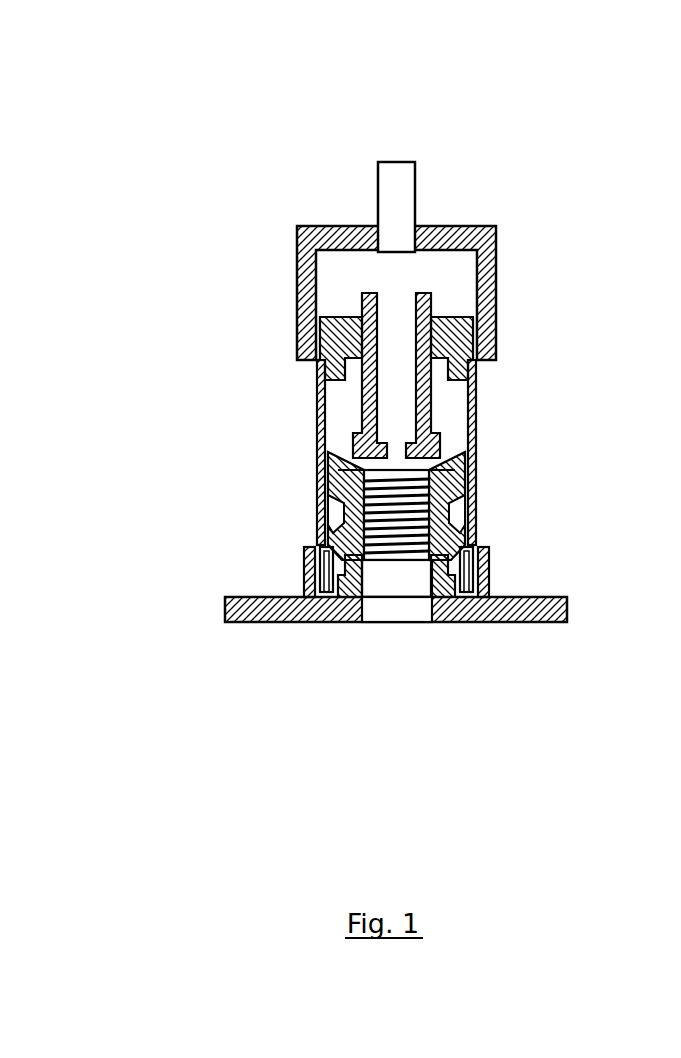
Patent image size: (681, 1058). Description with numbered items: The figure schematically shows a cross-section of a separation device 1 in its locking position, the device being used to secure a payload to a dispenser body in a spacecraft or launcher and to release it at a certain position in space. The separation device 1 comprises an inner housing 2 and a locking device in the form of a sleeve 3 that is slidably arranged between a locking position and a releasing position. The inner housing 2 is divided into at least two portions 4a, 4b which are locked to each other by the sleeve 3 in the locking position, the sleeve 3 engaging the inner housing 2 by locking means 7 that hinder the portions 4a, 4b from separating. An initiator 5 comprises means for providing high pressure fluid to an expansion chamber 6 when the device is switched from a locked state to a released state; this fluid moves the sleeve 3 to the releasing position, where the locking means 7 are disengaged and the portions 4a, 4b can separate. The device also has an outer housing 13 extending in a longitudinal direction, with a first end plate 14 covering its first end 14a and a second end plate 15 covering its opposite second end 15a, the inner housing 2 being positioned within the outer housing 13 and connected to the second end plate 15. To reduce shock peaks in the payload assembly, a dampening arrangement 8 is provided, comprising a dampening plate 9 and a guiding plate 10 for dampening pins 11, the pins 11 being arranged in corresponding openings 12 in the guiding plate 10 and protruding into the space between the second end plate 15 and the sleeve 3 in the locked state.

The separation device 1 is at (541, 103).
The inner housing 2 is at (349, 508).
The sleeve 3 is at (307, 382).
The first portion of inner housing 4a is at (361, 556).
The second portion of inner housing 4b is at (460, 586).
The initiator 5 is at (359, 173).
The expansion chamber 6 is at (331, 263).
The locking means 7 is at (476, 520).
The dampening arrangement 8 is at (196, 618).
The dampening plate 9 is at (271, 631).
The guiding plate 10 is at (289, 540).
The dampening pin 11 is at (313, 587).
The opening 12 is at (330, 588).
The outer housing 13 is at (282, 266).
The first end plate 14 is at (491, 241).
The first end of outer housing 14a is at (486, 305).
The second end plate 15 is at (524, 585).
The second end of outer housing 15a is at (499, 609).